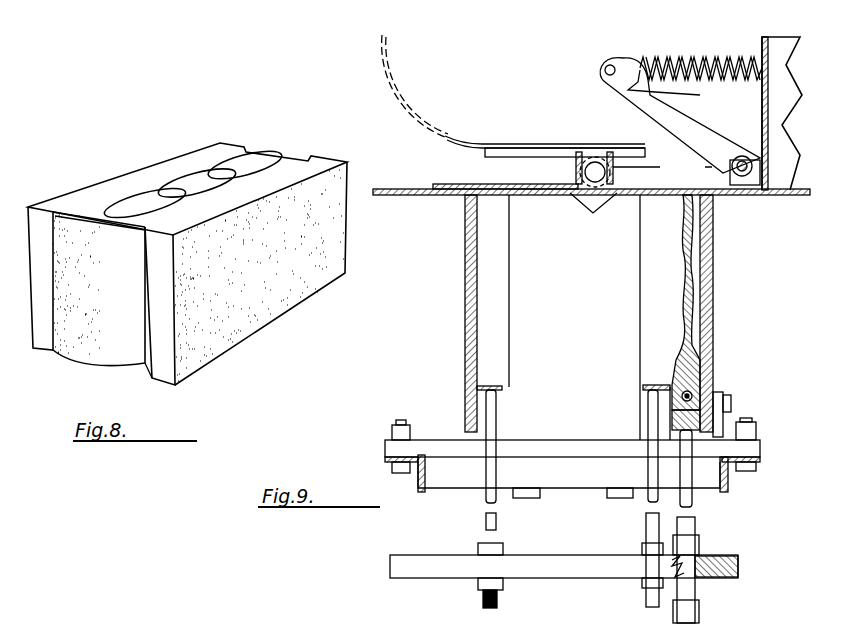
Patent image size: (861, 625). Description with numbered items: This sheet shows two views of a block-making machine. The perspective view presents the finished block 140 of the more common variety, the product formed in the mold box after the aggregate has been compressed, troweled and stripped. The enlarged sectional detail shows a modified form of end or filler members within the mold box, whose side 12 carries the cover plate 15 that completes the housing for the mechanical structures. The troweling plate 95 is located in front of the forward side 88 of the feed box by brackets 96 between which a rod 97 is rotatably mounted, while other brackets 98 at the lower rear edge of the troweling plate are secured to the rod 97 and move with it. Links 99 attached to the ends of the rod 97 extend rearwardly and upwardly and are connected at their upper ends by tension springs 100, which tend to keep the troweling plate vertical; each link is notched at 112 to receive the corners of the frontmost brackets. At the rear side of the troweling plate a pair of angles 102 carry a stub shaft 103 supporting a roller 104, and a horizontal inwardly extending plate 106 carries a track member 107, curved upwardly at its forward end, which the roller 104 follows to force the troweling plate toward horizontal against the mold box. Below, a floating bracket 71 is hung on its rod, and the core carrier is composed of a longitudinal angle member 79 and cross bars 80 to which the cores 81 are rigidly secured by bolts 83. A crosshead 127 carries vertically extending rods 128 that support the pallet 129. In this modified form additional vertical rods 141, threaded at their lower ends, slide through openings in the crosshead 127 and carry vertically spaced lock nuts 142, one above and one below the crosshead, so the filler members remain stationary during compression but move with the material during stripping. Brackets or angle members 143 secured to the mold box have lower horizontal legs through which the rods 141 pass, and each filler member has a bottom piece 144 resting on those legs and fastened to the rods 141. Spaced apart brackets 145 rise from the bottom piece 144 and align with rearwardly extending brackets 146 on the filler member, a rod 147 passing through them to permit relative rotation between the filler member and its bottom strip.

In FIG. 8, the finished block 140 is at (243, 322).
In FIG. 9, the cover plate 15 is at (790, 196).
In FIG. 9, the troweling plate 95 is at (470, 185).
In FIG. 9, the side of the mold box 12 is at (470, 333).
In FIG. 9, the cores 81 is at (518, 302).
In FIG. 9, the lock nuts 142 is at (690, 300).
In FIG. 9, the track member 107 is at (460, 137).
In FIG. 9, the horizontal inwardly extending plate 106 is at (522, 150).
In FIG. 9, the stub shaft 103 is at (585, 172).
In FIG. 9, the angles 102 is at (595, 193).
In FIG. 9, the roller 104 is at (662, 167).
In FIG. 9, the forward side of the feed box 88 is at (762, 42).
In FIG. 9, the tension springs 100 is at (677, 60).
In FIG. 9, the links 99 is at (648, 100).
In FIG. 9, the notch 112 is at (686, 89).
In FIG. 9, the brackets 98 is at (750, 192).
In FIG. 9, the brackets 96 is at (752, 158).
In FIG. 9, the rod 97 is at (737, 176).
In FIG. 9, the pallet 129 is at (487, 385).
In FIG. 9, the vertically extending rods 128 is at (657, 412).
In FIG. 9, the vertical rods 141 is at (690, 497).
In FIG. 9, the floating bracket 71 is at (445, 440).
In FIG. 9, the cross bars 80 is at (443, 472).
In FIG. 9, the longitudinal angle member 79 is at (418, 478).
In FIG. 9, the bolts 83 is at (607, 493).
In FIG. 9, the crosshead 127 is at (573, 565).
In FIG. 9, the rearwardly extending brackets 146 is at (680, 387).
In FIG. 9, the rod 147 is at (693, 393).
In FIG. 9, the bottom piece 144 is at (673, 418).
In FIG. 9, the brackets or angle members 143 is at (723, 418).
In FIG. 9, the spaced apart brackets 145 is at (731, 400).